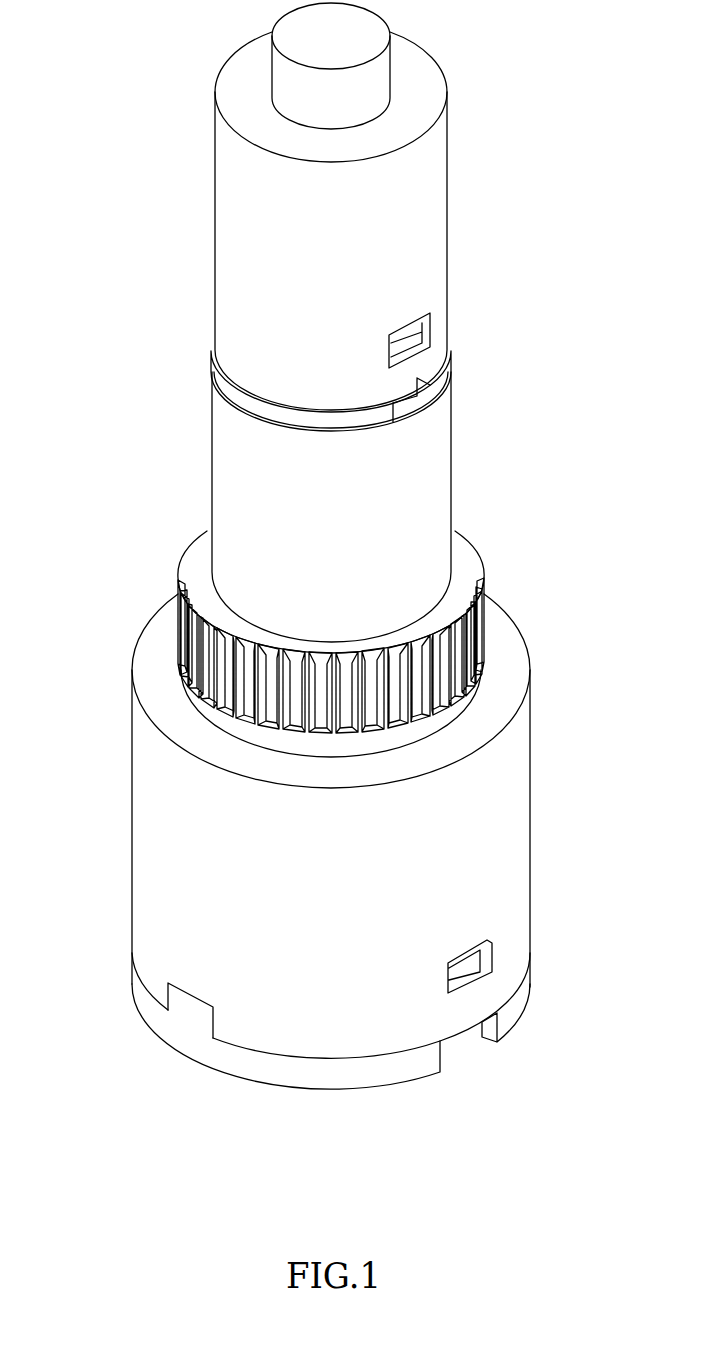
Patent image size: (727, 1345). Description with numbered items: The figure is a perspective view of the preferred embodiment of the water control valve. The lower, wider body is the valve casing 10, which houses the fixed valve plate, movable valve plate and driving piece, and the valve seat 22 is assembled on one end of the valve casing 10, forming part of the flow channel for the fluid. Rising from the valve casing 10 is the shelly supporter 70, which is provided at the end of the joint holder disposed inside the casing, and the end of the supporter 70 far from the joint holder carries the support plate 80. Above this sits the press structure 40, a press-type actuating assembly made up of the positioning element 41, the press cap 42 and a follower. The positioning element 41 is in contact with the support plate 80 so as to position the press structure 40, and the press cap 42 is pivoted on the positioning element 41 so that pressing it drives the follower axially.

The valve casing 10 is at (158, 786).
The valve seat 22 is at (415, 1062).
The press structure 40 is at (387, 206).
The positioning element 41 is at (416, 249).
The press cap 42 is at (359, 81).
The supporter 70 is at (228, 478).
The support plate 80 is at (225, 383).